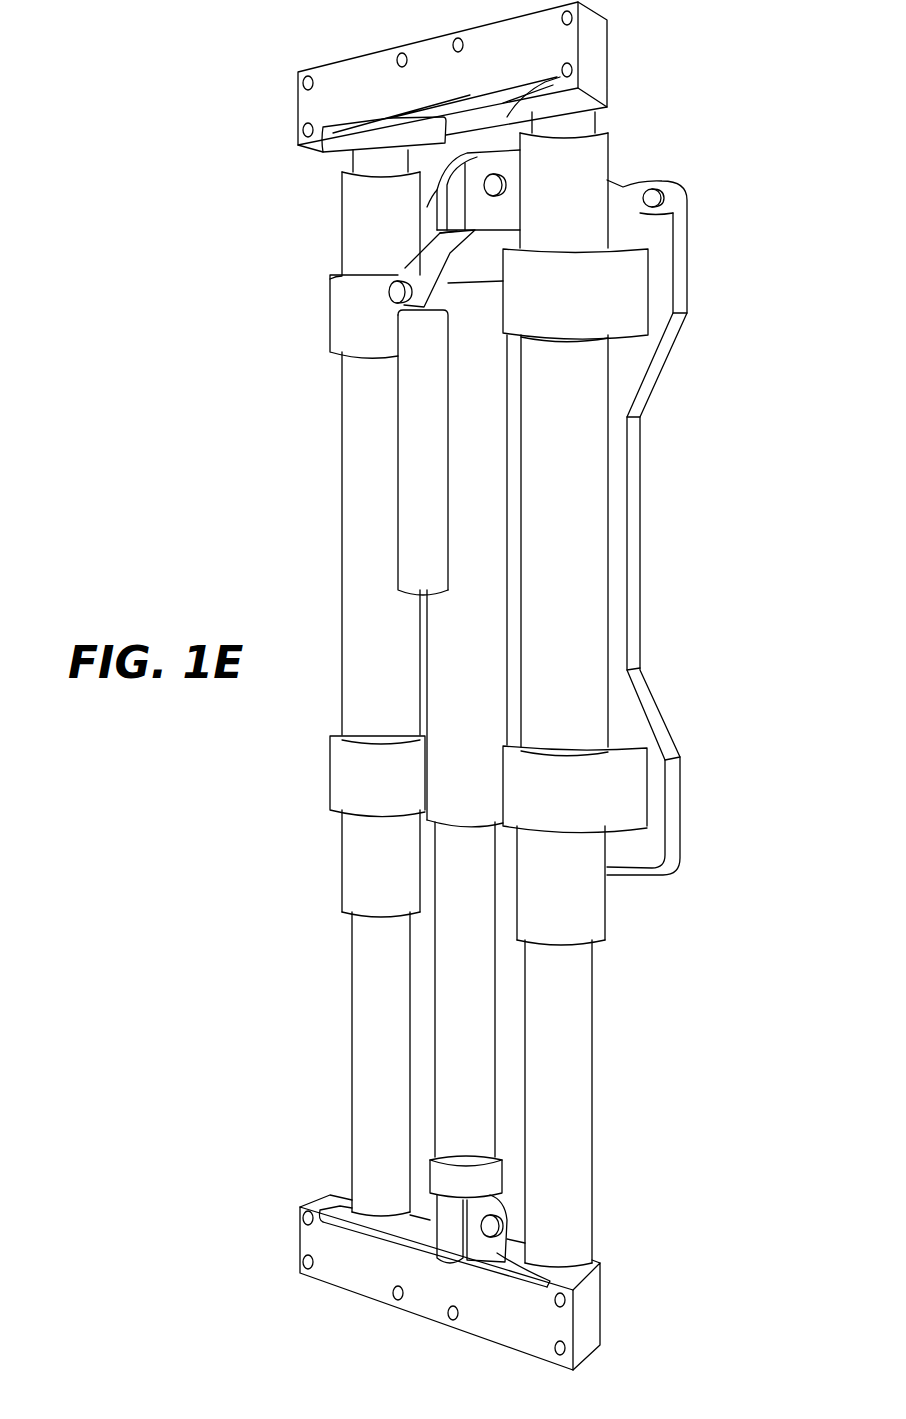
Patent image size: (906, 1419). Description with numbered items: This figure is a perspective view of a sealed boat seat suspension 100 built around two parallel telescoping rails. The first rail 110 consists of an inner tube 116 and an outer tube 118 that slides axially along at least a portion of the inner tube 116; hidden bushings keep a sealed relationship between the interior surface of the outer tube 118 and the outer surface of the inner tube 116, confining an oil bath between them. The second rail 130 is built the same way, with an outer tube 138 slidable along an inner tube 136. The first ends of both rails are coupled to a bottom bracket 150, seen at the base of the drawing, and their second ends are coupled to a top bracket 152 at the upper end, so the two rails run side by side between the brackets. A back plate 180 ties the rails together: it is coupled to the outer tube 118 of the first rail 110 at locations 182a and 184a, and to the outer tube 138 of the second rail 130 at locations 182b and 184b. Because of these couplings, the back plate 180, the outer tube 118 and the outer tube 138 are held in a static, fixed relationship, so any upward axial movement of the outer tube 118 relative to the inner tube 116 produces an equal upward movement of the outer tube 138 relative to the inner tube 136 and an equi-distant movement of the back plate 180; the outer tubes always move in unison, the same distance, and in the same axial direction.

The sealed boat seat suspension 100 is at (657, 67).
The first rail 110 is at (597, 1148).
The inner tube 116 is at (597, 1090).
The outer tube 118 is at (598, 928).
The second rail 130 is at (343, 1148).
The inner tube 136 is at (365, 1065).
The outer tube 138 is at (352, 873).
The bottom bracket 150 is at (602, 1312).
The top bracket 152 is at (423, 43).
The back plate 180 is at (676, 300).
The location 182a is at (590, 302).
The location 182b is at (337, 312).
The location 184a is at (590, 793).
The location 184b is at (337, 770).